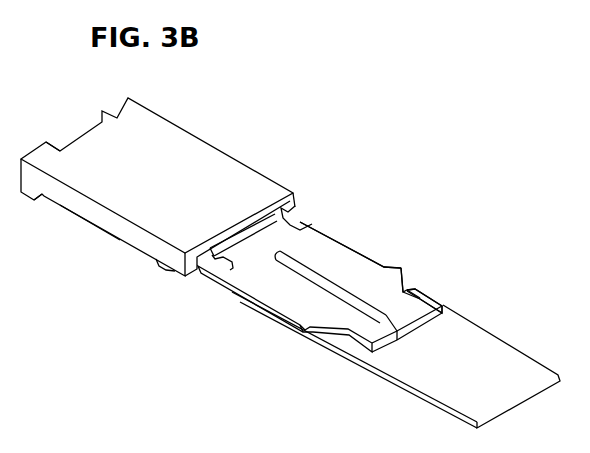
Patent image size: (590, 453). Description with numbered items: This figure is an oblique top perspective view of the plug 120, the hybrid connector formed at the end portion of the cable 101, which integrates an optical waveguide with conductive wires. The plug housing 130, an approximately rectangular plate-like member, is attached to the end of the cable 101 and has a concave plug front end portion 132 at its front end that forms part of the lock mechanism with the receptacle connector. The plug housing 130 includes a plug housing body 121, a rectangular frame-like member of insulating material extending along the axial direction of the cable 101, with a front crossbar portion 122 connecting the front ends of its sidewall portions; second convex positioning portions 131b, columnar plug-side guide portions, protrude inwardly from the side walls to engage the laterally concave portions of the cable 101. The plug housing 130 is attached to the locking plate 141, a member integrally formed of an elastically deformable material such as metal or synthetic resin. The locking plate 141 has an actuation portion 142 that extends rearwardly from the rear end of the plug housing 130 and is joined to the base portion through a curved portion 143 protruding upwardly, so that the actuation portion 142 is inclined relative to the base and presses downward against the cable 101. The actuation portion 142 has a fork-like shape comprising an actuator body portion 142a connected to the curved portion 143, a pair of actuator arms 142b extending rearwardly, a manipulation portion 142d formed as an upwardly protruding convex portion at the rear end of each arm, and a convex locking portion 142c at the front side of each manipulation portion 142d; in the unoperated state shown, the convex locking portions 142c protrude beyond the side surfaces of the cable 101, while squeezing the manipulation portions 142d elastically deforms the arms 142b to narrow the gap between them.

The cable 101 is at (523, 350).
The plug 120 is at (378, 181).
The plug housing body 121 is at (97, 225).
The front crossbar portion 122 is at (47, 200).
The plug housing 130 is at (205, 152).
The second convex positioning portion 131b is at (157, 262).
The concave plug front end portion 132 is at (82, 135).
The locking plate 141 is at (218, 265).
The actuation portion 142 is at (257, 260).
The actuator body portion 142a is at (353, 257).
The actuator arm 142b is at (358, 258).
The convex locking portion 142c is at (403, 268).
The manipulation portion 142d is at (433, 298).
The curved portion 143 is at (292, 210).